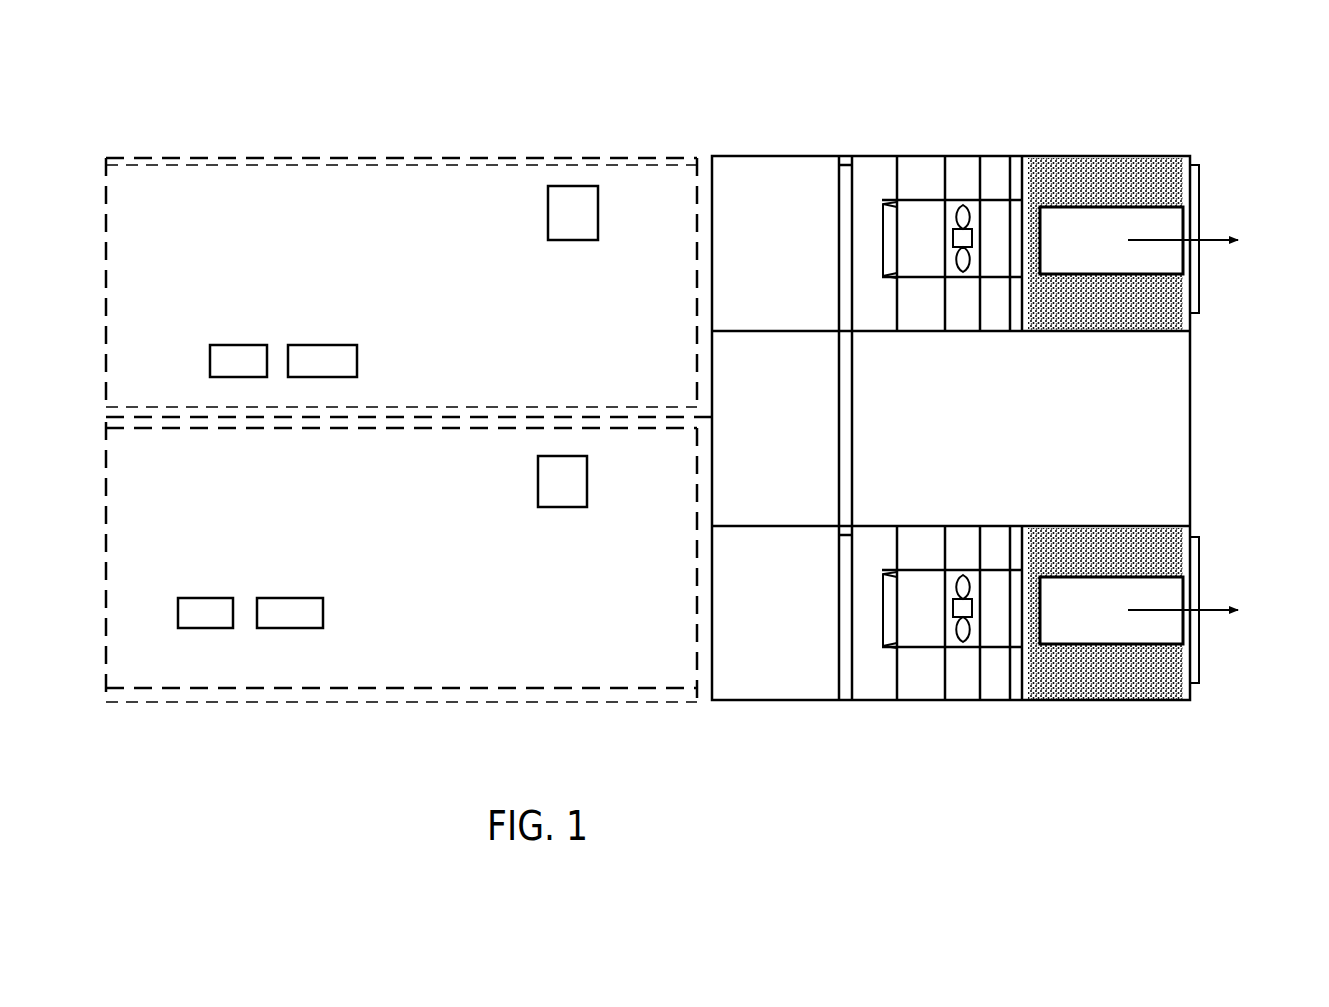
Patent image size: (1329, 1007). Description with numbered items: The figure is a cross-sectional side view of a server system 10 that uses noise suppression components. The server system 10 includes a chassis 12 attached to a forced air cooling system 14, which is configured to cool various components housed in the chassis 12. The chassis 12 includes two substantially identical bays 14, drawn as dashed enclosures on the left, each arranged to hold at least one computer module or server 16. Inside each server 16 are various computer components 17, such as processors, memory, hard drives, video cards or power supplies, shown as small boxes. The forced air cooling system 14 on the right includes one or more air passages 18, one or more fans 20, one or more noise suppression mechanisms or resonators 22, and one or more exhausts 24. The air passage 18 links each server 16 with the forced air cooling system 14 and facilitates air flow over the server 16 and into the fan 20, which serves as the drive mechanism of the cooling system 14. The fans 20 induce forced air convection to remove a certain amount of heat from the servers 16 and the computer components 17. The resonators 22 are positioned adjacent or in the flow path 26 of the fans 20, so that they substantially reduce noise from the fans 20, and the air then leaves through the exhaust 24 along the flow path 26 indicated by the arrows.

The server system 10 is at (1193, 46).
The chassis 12 is at (120, 724).
The forced air cooling system 14 is at (105, 257).
The server 16 is at (263, 185).
The computer component 17 is at (570, 241).
The air passage 18 is at (760, 700).
The fan 20 is at (962, 325).
The resonator 22 is at (920, 165).
The exhaust 24 is at (1239, 201).
The flow path 26 is at (1215, 243).